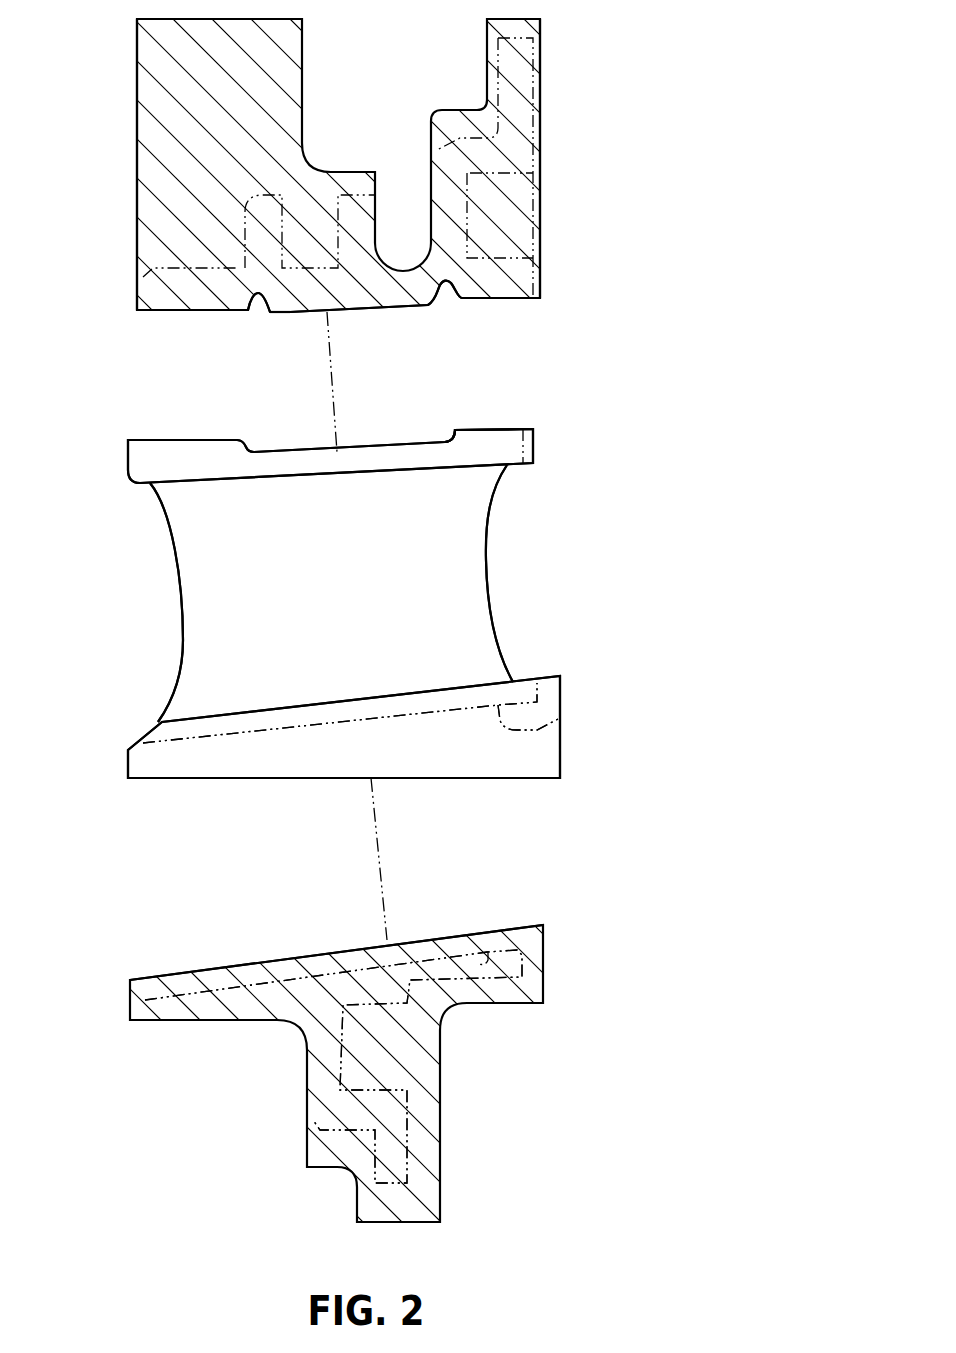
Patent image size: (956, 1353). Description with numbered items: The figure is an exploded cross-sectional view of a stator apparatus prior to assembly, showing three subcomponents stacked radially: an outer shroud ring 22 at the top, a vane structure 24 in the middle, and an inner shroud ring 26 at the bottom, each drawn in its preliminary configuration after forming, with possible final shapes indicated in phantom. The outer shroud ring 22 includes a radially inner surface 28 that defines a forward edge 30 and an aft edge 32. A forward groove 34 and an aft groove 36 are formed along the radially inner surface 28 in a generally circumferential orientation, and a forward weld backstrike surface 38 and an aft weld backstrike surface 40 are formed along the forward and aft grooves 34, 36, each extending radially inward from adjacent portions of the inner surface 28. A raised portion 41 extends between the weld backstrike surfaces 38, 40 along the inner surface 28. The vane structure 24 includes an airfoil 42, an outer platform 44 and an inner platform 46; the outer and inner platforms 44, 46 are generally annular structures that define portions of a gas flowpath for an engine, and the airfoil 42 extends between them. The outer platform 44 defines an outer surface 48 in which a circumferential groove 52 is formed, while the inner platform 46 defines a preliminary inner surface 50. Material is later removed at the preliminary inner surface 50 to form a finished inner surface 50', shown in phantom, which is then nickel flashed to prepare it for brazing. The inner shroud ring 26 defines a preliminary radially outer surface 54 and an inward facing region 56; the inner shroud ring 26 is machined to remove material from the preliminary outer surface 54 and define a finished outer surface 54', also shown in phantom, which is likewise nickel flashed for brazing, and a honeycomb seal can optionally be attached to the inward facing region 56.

The outer shroud ring 22 is at (522, 197).
The vane structure 24 is at (458, 578).
The inner shroud ring 26 is at (428, 1088).
The radially inner surface 28 is at (168, 310).
The forward edge 30 is at (137, 311).
The aft edge 32 is at (540, 298).
The forward groove 34 is at (255, 308).
The aft groove 36 is at (457, 300).
The forward weld backstrike surface 38 is at (270, 311).
The aft weld backstrike surface 40 is at (440, 297).
The raised portion 41 is at (362, 312).
The airfoil 42 is at (305, 598).
The outer platform 44 is at (138, 462).
The inner platform 46 is at (171, 731).
The outer surface 48 is at (152, 440).
The preliminary inner surface 50 is at (344, 812).
The finished inner surface 50' is at (385, 713).
The circumferential groove 52 is at (425, 443).
The preliminary radially outer surface 54 is at (336, 945).
The finished outer surface 54' is at (333, 1025).
The inward facing region 56 is at (188, 1020).